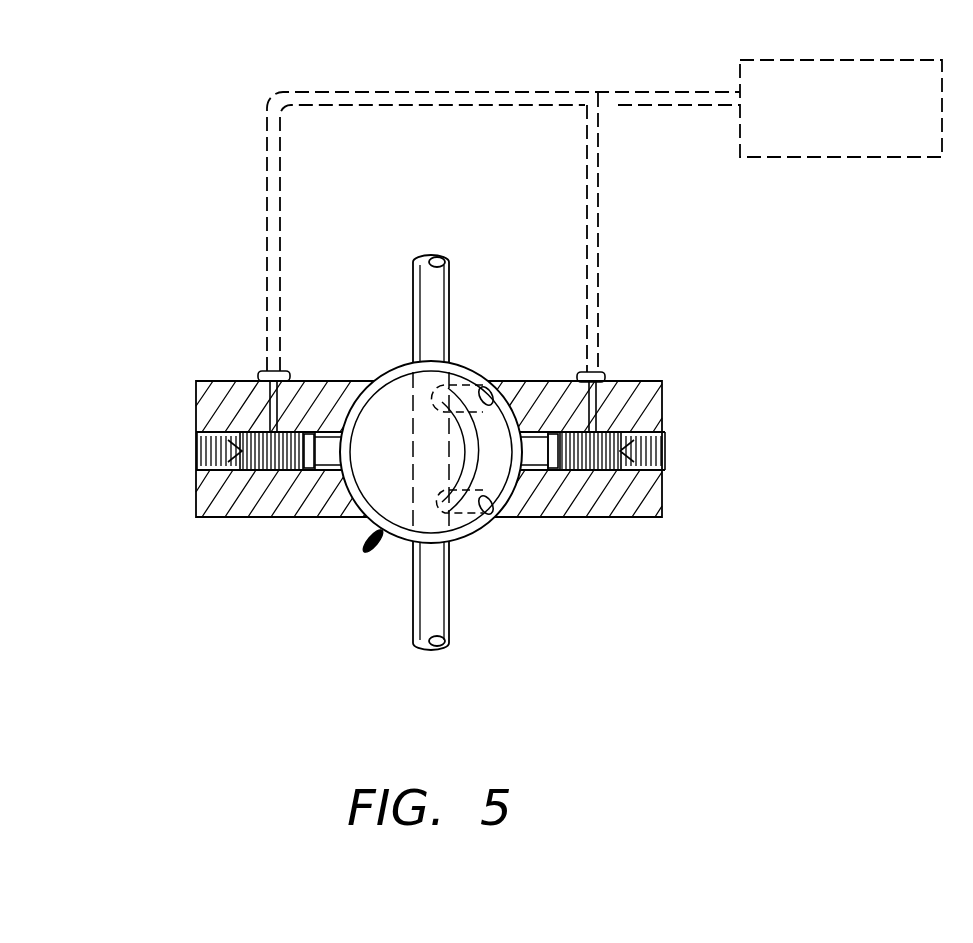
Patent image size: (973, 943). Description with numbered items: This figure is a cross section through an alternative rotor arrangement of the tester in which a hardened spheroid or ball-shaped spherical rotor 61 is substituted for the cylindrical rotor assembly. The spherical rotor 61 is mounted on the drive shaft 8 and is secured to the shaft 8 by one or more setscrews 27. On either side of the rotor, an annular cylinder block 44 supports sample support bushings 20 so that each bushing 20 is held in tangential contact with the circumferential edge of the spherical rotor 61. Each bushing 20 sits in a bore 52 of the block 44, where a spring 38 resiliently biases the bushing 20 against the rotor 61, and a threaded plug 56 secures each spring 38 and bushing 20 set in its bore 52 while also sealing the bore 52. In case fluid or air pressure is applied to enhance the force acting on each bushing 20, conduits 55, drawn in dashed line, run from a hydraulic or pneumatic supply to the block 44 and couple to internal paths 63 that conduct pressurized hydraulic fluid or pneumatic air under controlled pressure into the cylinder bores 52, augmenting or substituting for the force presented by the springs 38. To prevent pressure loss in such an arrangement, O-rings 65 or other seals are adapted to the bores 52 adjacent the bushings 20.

The drive shaft 8 is at (449, 315).
The sample support bushing 20 is at (323, 438).
The setscrew 27 is at (483, 374).
The spring 38 is at (270, 470).
The annular cylinder block 44 is at (662, 382).
The bore 52 is at (197, 470).
The conduit 55 is at (598, 92).
The threaded plug 56 is at (195, 450).
The spherical rotor 61 is at (380, 533).
The internal path 63 is at (270, 408).
The O-ring 65 is at (308, 470).